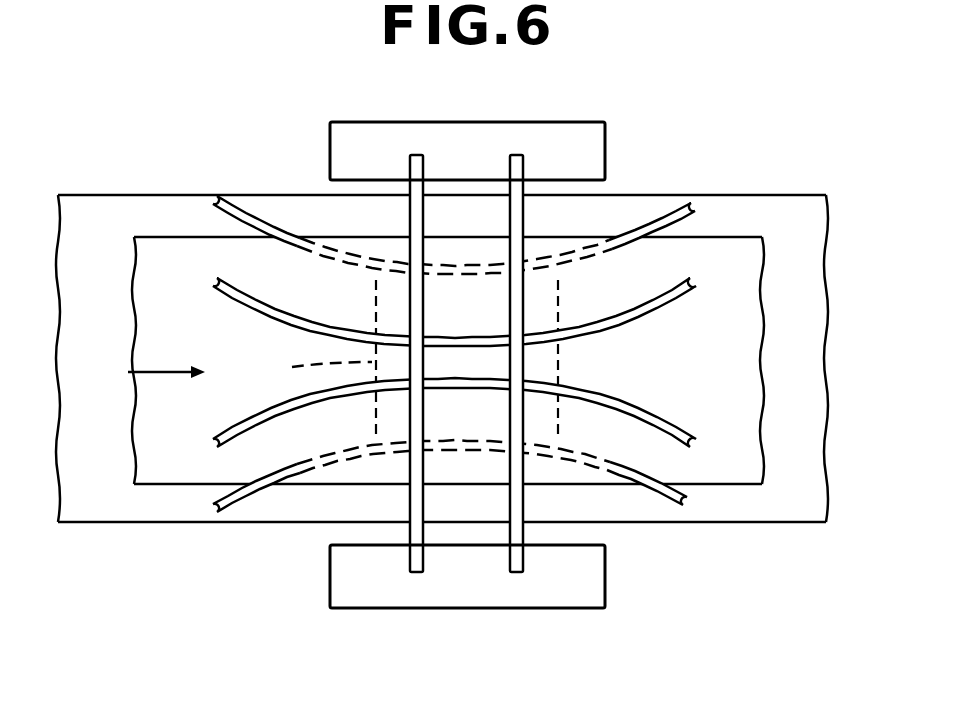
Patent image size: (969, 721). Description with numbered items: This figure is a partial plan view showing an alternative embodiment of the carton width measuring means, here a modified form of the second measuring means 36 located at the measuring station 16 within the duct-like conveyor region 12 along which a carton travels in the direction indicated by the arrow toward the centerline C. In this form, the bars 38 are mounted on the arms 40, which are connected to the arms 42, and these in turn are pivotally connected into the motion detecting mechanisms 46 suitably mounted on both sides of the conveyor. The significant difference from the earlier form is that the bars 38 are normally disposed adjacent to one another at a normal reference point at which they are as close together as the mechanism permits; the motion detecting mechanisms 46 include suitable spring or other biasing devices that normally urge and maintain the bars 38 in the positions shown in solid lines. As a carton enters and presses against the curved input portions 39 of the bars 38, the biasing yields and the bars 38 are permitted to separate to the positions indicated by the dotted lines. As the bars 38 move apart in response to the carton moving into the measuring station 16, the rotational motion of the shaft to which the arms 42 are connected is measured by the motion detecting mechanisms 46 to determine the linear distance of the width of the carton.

The duct 12 is at (180, 527).
The measuring station 16 is at (155, 232).
The second measuring means 36 is at (300, 546).
The bars 38 is at (672, 305).
The curved input portions 39 is at (222, 296).
The arms 40 is at (503, 322).
The arms 42 is at (510, 168).
The motion detecting mechanisms 46 is at (616, 146).
The flow centerline C is at (320, 367).